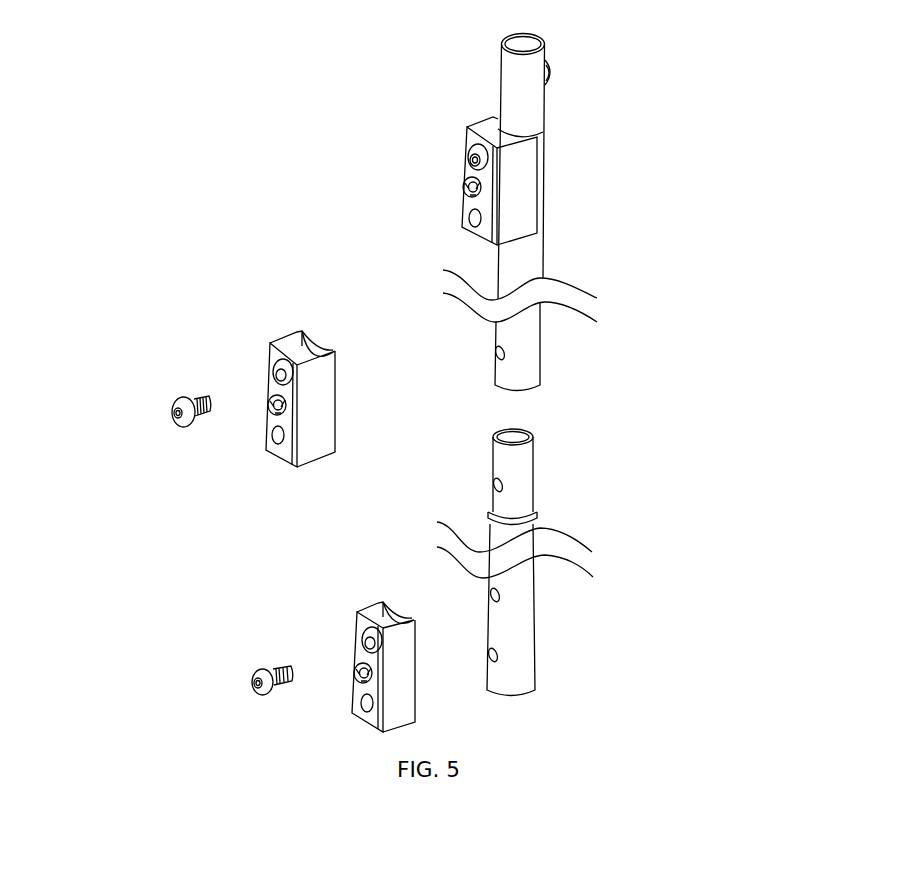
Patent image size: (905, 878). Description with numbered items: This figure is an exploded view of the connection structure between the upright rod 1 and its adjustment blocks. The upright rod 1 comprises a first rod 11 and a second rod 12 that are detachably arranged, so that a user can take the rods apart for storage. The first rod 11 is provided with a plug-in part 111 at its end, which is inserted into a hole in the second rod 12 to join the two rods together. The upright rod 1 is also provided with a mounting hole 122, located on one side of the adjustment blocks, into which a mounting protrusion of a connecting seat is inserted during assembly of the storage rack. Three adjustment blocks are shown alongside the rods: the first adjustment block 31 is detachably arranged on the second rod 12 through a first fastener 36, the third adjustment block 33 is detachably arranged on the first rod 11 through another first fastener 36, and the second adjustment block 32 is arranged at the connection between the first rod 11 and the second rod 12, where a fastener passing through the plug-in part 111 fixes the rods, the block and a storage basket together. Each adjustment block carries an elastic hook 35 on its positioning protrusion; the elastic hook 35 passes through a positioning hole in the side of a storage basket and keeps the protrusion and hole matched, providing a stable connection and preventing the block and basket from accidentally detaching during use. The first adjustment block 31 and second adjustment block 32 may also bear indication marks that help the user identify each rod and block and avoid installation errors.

The upright rod 1 is at (670, 313).
The first rod 11 is at (522, 597).
The plug-in part 111 is at (503, 467).
The second rod 12 is at (527, 367).
The mounting hole 122 is at (620, 22).
The first adjustment block 31 is at (523, 163).
The second adjustment block 32 is at (320, 370).
The third adjustment block 33 is at (405, 708).
The elastic hook 35 is at (467, 185).
The first fastener 36 is at (470, 146).